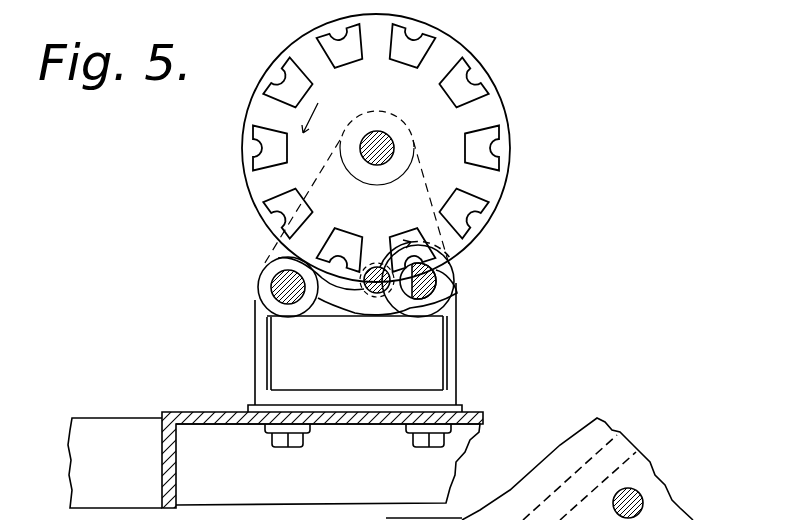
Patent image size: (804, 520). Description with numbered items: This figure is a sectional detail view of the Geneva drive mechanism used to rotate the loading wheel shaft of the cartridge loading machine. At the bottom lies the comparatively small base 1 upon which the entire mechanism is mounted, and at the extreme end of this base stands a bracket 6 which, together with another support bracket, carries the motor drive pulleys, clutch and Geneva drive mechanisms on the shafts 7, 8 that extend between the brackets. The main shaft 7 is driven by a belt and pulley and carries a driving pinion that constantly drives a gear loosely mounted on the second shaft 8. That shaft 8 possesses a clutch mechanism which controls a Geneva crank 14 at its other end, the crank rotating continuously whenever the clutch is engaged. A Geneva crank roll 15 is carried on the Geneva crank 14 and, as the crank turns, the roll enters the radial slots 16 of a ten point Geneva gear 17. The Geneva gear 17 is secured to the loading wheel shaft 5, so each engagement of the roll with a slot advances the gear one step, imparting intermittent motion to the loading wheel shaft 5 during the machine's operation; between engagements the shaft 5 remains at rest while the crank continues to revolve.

The base 1 is at (185, 413).
The loading wheel shaft 5 is at (382, 142).
The bracket 6 is at (424, 368).
The main shaft 7 is at (271, 288).
The shaft 8 is at (436, 281).
The Geneva crank 14 is at (404, 306).
The Geneva crank roll 15 is at (377, 266).
The radial slots 16 is at (472, 172).
The ten point Geneva gear 17 is at (440, 53).